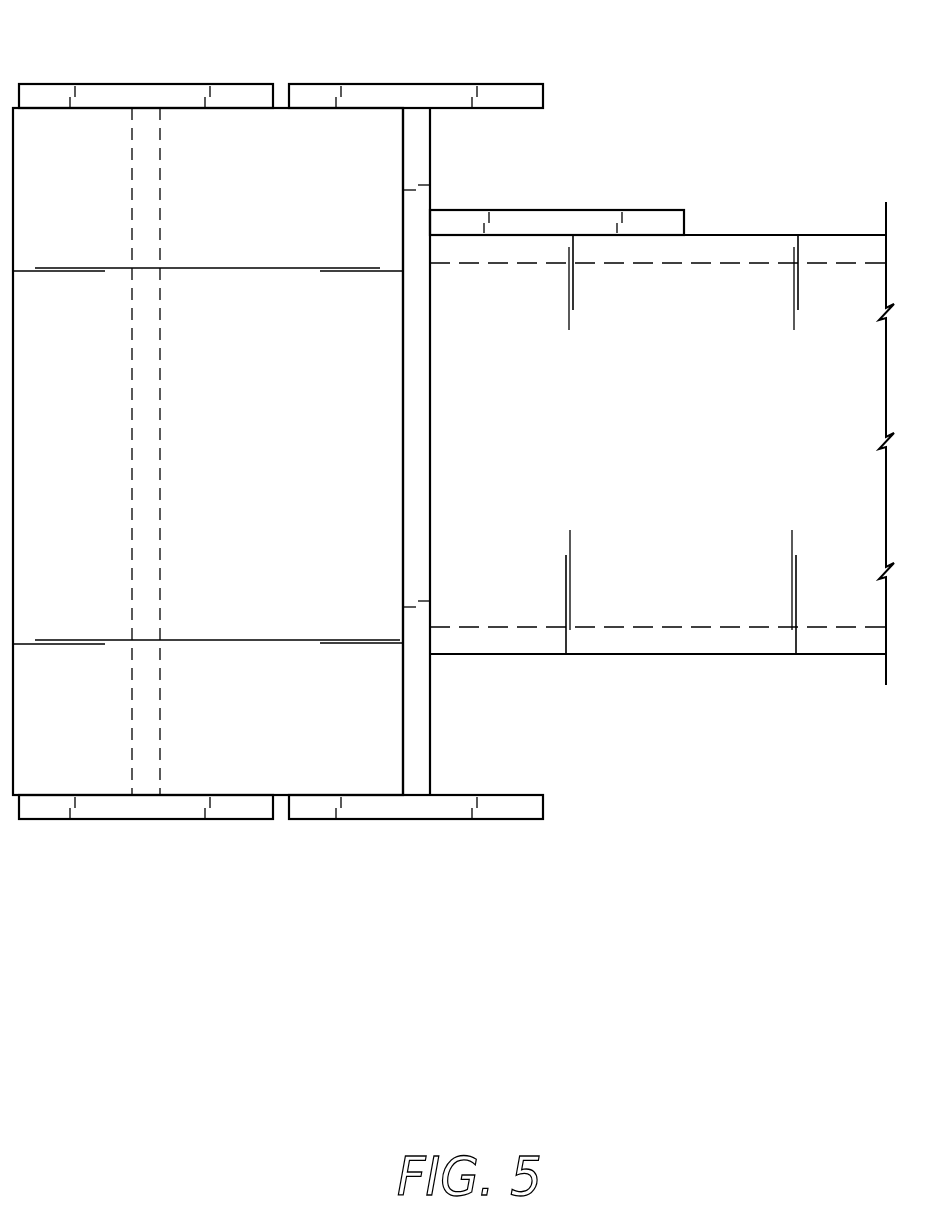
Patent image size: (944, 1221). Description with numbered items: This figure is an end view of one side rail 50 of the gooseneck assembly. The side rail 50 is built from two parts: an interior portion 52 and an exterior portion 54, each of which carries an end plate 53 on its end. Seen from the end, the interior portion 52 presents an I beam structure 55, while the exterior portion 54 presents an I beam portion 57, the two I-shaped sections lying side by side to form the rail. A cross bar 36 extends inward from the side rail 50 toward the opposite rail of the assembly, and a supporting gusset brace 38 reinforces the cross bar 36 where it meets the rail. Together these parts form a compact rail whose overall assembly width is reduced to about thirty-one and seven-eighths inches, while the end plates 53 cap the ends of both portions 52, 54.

The cross bar 36 is at (836, 245).
The gusset brace 38 is at (651, 222).
The side rail 50 is at (317, 78).
The interior portion 52 is at (512, 97).
The end plate 53 is at (247, 780).
The exterior portion 54 is at (232, 97).
The I beam structure 55 is at (432, 132).
The I beam portion 57 is at (130, 127).